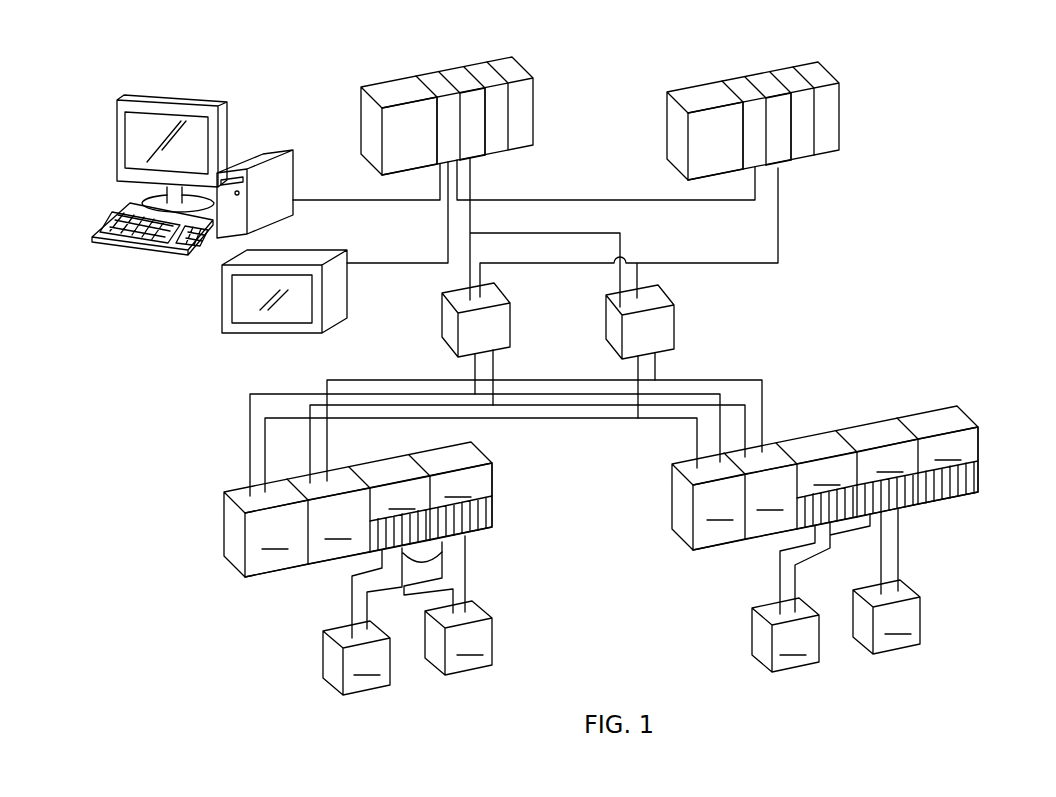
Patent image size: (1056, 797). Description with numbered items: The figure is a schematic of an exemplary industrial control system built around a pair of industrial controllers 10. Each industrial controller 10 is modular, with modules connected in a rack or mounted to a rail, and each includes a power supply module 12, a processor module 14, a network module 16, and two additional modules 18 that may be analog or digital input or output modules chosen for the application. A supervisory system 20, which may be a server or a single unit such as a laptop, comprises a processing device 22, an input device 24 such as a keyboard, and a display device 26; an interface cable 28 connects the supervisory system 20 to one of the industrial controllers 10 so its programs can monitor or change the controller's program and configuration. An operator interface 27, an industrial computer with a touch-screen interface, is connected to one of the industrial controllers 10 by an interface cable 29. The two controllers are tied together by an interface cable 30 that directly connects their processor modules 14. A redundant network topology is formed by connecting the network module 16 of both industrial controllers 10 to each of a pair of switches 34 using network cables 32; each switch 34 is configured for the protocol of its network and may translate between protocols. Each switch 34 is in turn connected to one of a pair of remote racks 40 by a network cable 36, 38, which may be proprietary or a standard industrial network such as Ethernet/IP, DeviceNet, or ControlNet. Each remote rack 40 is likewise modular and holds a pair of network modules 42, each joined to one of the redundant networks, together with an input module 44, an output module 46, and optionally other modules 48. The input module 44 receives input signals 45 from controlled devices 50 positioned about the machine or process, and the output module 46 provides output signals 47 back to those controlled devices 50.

The industrial controller 10 is at (352, 47).
The power supply module 12 is at (400, 90).
The processor module 14 is at (430, 83).
The network module 16 is at (460, 82).
The additional module 18 is at (505, 72).
The supervisory system 20 is at (88, 66).
The processing device 22 is at (267, 157).
The input device 24 is at (110, 216).
The display device 26 is at (117, 137).
The operator interface 27 is at (217, 313).
The interface cable 28 is at (370, 201).
The interface cable 29 is at (380, 265).
The interface cable 30 is at (602, 199).
The network cable 32 is at (471, 210).
The switch 34 is at (447, 317).
The network cable 36 is at (263, 437).
The network cable 38 is at (311, 447).
The remote rack 40 is at (198, 523).
The network module 42 is at (521, 510).
The input module 44 is at (613, 491).
The input signals 45 is at (351, 582).
The output module 46 is at (674, 479).
The output signals 47 is at (366, 612).
The other module 48 is at (948, 465).
The controlled device 50 is at (621, 637).